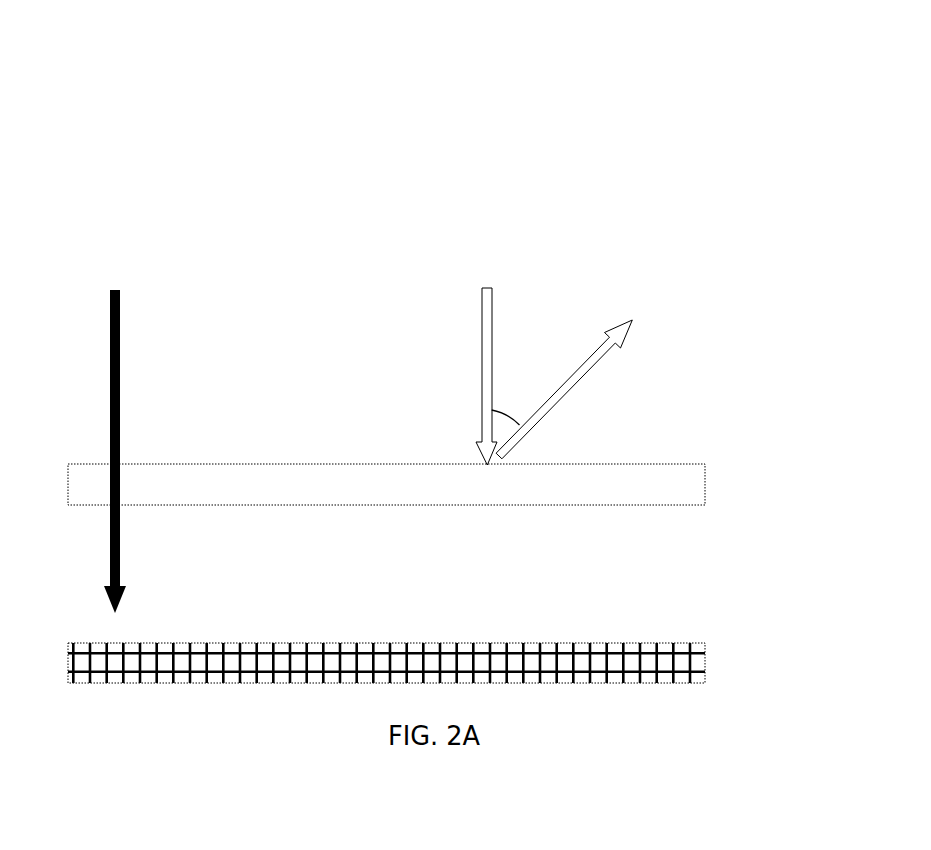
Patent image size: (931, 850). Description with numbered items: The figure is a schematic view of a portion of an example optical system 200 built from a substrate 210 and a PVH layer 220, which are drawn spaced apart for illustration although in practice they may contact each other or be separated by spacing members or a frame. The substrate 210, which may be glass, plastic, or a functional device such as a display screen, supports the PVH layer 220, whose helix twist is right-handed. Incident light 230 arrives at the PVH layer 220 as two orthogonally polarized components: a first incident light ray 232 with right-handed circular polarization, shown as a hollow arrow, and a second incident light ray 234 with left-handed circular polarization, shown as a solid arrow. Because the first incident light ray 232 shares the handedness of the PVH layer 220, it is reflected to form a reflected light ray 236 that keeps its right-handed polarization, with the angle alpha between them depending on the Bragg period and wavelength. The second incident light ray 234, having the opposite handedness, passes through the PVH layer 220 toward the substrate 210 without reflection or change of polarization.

The optical system 200 is at (434, 67).
The substrate 210 is at (705, 663).
The PVH layer 220 is at (705, 483).
The incident light 230 is at (443, 188).
The first incident light ray 232 is at (484, 288).
The second incident light ray 234 is at (115, 290).
The reflected light ray 236 is at (602, 360).